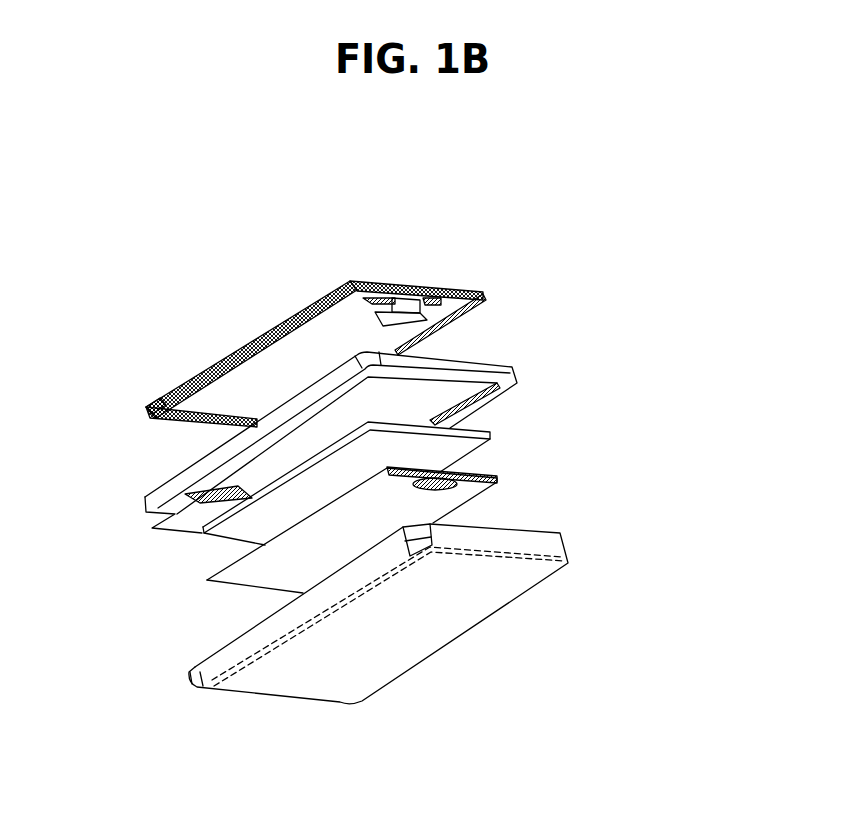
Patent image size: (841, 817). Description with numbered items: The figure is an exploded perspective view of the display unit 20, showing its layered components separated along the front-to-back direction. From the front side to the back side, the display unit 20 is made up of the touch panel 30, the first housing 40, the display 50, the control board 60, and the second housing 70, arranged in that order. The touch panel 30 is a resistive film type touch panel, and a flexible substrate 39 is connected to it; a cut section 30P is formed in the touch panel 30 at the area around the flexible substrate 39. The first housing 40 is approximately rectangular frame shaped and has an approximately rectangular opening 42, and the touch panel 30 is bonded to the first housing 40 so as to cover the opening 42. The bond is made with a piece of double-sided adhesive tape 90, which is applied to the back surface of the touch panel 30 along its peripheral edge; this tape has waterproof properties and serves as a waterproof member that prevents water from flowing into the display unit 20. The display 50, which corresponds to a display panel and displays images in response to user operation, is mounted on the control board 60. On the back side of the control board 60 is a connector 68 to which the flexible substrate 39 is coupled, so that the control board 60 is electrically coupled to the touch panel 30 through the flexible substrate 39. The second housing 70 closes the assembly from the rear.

The display unit 20 is at (476, 251).
The touch panel 30 is at (491, 286).
The cut section 30P is at (370, 282).
The flexible substrate 39 is at (416, 296).
The first housing 40 is at (511, 367).
The opening 42 is at (437, 395).
The display 50 is at (492, 435).
The control board 60 is at (482, 473).
The connector 68 is at (433, 524).
The second housing 70 is at (556, 538).
The double-sided adhesive tape 90 is at (146, 407).